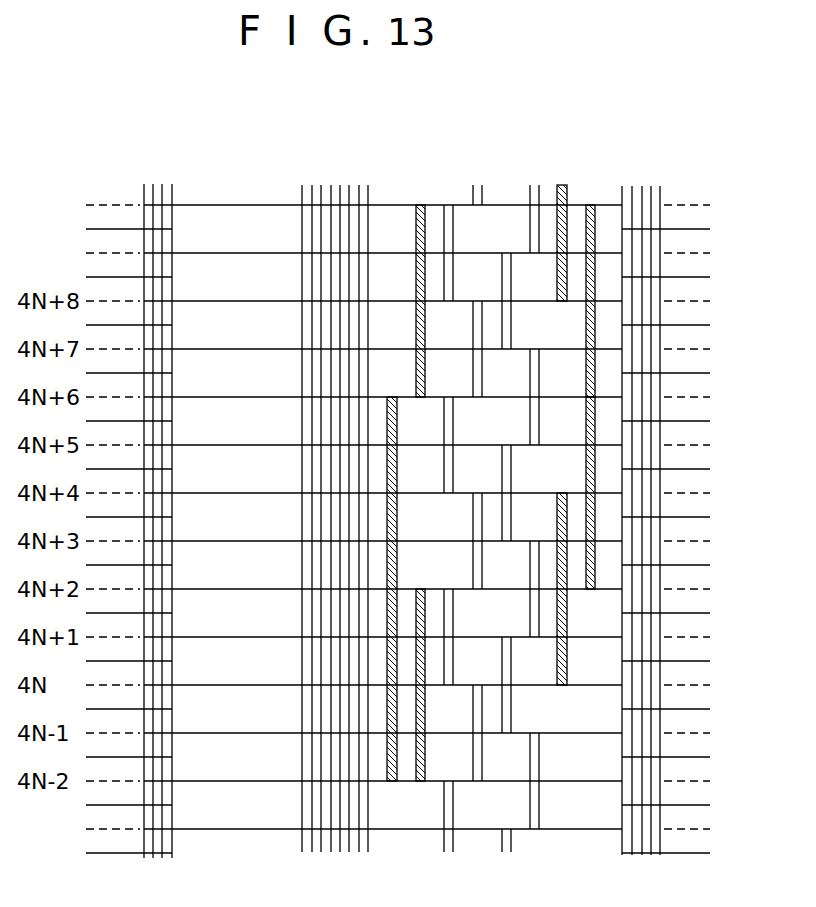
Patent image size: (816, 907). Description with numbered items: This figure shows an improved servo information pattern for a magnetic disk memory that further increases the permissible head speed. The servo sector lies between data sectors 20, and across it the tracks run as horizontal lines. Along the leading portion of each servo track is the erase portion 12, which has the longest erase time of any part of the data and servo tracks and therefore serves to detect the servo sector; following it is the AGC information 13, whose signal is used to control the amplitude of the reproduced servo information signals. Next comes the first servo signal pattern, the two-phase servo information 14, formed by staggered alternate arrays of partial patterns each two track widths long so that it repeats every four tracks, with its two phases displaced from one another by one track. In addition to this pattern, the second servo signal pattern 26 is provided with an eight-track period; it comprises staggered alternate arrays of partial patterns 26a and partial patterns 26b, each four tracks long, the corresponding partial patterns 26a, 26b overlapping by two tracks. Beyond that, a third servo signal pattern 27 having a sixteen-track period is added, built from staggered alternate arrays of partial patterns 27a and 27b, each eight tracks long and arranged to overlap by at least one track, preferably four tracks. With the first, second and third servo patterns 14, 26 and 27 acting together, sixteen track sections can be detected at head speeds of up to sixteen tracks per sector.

The erase portion 12 is at (236, 196).
The AGC information 13 is at (331, 193).
The two-phase servo information 14 is at (550, 180).
The data sector 20 is at (111, 193).
The second servo signal pattern 26 is at (418, 204).
The partial pattern 26a is at (420, 783).
The partial pattern 26b is at (562, 688).
The third servo signal pattern 27 is at (590, 204).
The partial pattern 27a is at (392, 783).
The partial pattern 27b is at (591, 592).